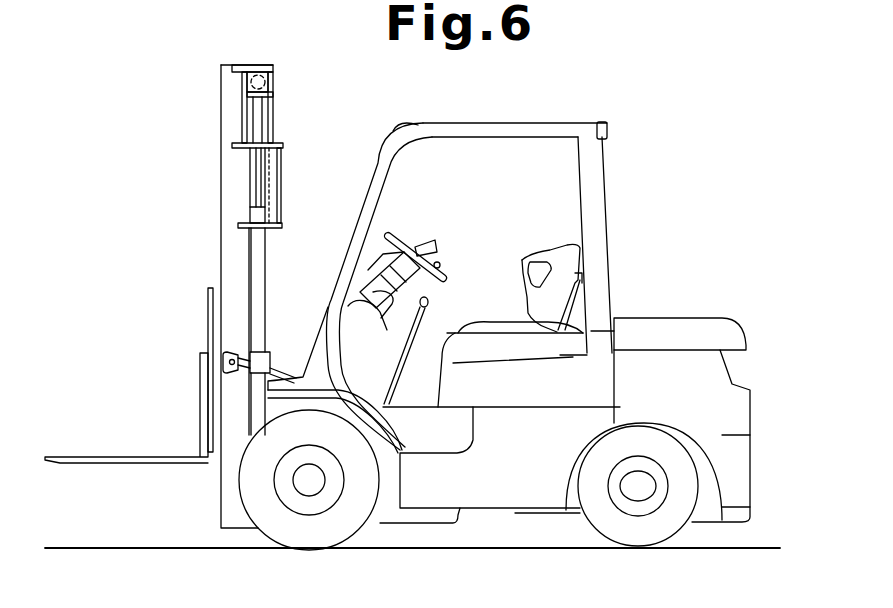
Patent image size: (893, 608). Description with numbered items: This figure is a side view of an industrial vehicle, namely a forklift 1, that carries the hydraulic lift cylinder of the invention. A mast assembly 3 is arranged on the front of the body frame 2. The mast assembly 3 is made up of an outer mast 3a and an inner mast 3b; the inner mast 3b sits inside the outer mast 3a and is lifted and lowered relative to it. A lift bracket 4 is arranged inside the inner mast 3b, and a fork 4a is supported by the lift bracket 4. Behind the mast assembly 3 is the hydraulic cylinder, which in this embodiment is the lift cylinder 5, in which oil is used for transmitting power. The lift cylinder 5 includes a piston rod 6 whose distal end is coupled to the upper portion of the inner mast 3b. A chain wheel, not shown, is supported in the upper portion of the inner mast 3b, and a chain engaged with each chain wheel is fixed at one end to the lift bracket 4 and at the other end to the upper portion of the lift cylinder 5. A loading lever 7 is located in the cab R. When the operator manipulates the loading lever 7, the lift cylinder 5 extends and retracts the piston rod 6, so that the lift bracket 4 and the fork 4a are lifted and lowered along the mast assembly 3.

The forklift 1 is at (712, 111).
The body frame 2 is at (455, 510).
The mast assembly 3 is at (222, 156).
The outer mast 3a is at (222, 216).
The inner mast 3b is at (222, 87).
The lift bracket 4 is at (210, 312).
The fork 4a is at (101, 457).
The lift cylinder 5 is at (265, 287).
The piston rod 6 is at (262, 175).
The loading lever 7 is at (434, 240).
The cab R is at (487, 227).